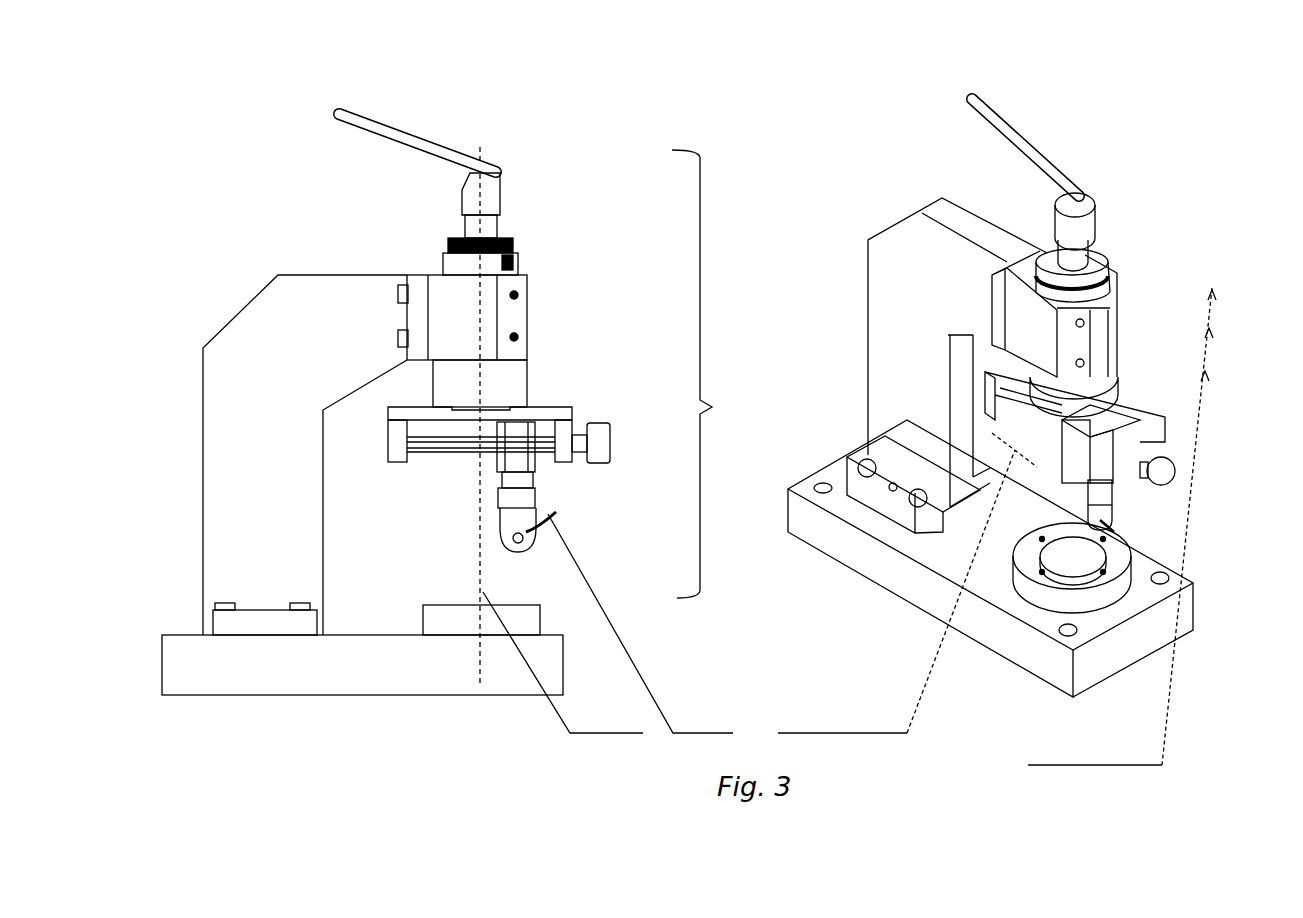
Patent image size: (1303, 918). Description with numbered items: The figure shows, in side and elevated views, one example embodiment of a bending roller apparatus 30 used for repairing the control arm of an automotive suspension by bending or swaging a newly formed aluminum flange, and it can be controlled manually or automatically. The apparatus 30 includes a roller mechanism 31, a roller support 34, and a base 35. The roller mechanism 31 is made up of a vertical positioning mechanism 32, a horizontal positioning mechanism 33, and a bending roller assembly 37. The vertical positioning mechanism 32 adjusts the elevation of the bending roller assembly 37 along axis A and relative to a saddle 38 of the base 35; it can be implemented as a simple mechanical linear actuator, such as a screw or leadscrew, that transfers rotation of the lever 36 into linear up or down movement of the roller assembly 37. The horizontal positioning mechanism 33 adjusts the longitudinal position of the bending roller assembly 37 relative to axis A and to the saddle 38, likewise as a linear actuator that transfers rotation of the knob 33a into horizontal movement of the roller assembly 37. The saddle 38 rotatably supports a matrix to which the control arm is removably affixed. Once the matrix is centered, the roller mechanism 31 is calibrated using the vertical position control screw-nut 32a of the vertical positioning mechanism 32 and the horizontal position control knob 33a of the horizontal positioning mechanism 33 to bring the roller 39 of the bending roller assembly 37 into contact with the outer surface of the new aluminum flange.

The bending roller apparatus 30 is at (475, 120).
The roller mechanism 31 is at (1235, 245).
The vertical positioning mechanism 32 is at (590, 192).
The vertical position control screw-nut 32a is at (1098, 260).
The horizontal positioning mechanism 33 is at (445, 500).
The horizontal position control knob 33a is at (1175, 471).
The roller support 34 is at (257, 342).
The base 35 is at (375, 658).
The lever 36 is at (349, 138).
The bending roller assembly 37 is at (535, 510).
The saddle 38 is at (442, 617).
The roller 39 is at (530, 550).